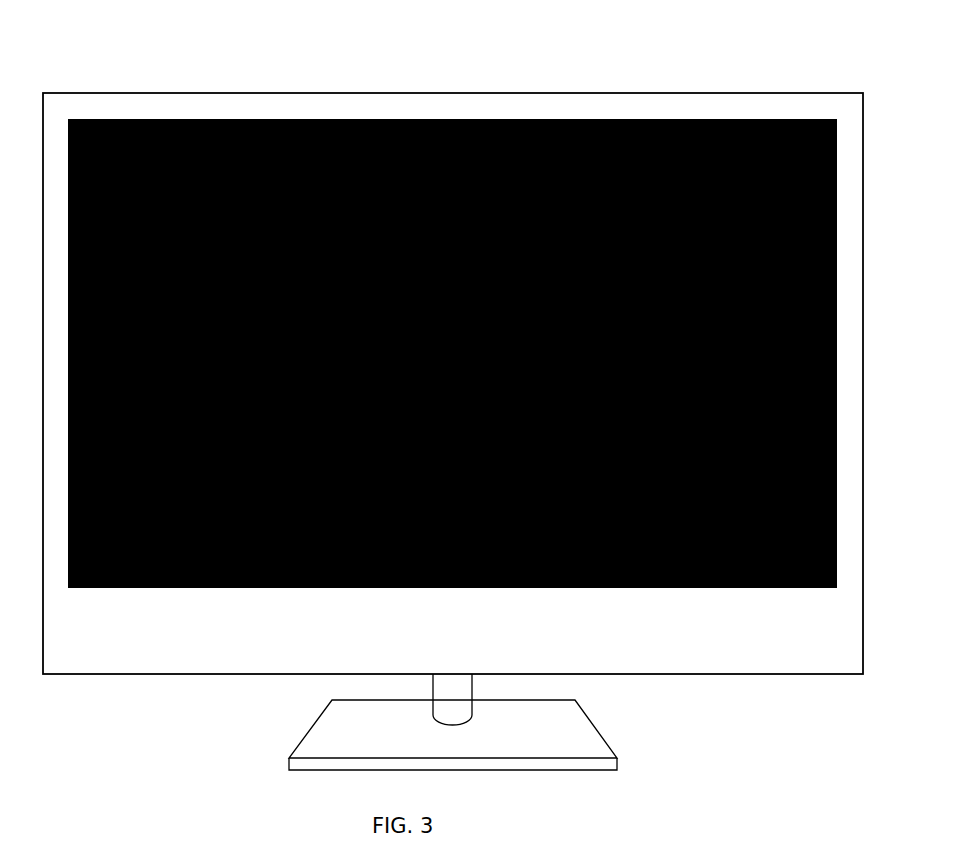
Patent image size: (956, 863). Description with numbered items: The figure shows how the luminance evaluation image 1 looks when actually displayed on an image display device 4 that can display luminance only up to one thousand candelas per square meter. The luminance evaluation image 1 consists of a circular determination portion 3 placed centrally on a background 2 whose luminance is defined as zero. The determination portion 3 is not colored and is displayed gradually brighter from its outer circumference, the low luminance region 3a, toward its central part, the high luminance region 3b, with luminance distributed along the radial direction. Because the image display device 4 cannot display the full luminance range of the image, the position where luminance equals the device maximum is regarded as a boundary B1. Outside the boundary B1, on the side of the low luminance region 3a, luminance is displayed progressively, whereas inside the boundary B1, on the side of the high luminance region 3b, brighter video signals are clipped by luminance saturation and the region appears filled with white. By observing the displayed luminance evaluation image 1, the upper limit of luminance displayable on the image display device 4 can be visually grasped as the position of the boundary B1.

The luminance evaluation image 1 is at (510, 114).
The background 2 is at (605, 145).
The determination portion 3 is at (352, 186).
The low luminance region 3a is at (435, 160).
The high luminance region 3b is at (432, 378).
The boundary B1 is at (417, 260).
The image display device 4 is at (773, 685).